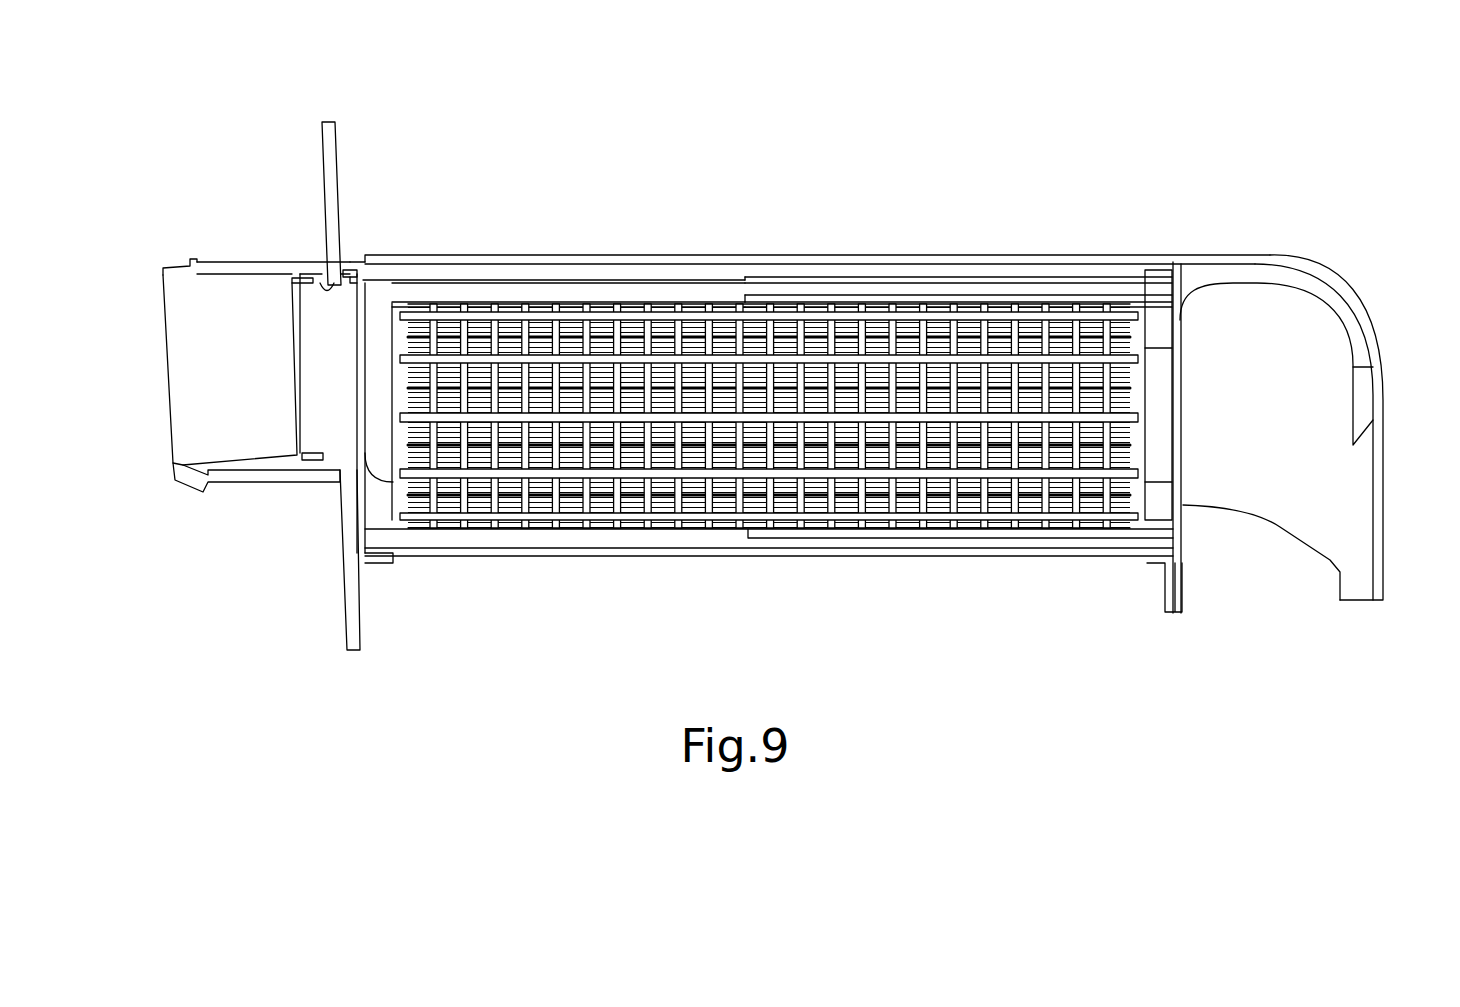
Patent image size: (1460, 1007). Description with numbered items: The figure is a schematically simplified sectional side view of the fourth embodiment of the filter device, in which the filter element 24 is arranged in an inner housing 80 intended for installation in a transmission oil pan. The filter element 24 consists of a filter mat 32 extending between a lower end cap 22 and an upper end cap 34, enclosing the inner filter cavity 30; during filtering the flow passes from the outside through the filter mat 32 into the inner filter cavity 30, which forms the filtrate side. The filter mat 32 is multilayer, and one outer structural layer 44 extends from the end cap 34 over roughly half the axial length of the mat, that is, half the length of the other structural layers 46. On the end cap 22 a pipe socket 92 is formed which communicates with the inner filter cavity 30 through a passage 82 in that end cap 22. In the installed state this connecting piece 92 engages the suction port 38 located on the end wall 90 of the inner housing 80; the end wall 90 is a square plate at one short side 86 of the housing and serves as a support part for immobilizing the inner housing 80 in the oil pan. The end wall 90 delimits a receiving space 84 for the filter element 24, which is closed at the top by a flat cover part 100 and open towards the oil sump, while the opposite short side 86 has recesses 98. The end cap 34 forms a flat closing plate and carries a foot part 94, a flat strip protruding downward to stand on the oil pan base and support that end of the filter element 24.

The end cap 22 is at (357, 290).
The filter element 24 is at (687, 585).
The inner filter cavity 30 is at (377, 393).
The filter mat 32 is at (750, 385).
The end cap 34 is at (1205, 300).
The suction port 38 is at (217, 267).
The structural layer 44 is at (600, 300).
The structural layers 46 is at (945, 562).
The inner housing 80 is at (1300, 257).
The passage 82 is at (390, 560).
The receiving space 84 is at (1243, 336).
The short side 86 is at (340, 257).
The end wall 90 is at (320, 183).
The pipe socket 92 is at (317, 282).
The foot part 94 is at (1177, 590).
The recesses 98 is at (1280, 527).
The cover part 100 is at (830, 253).